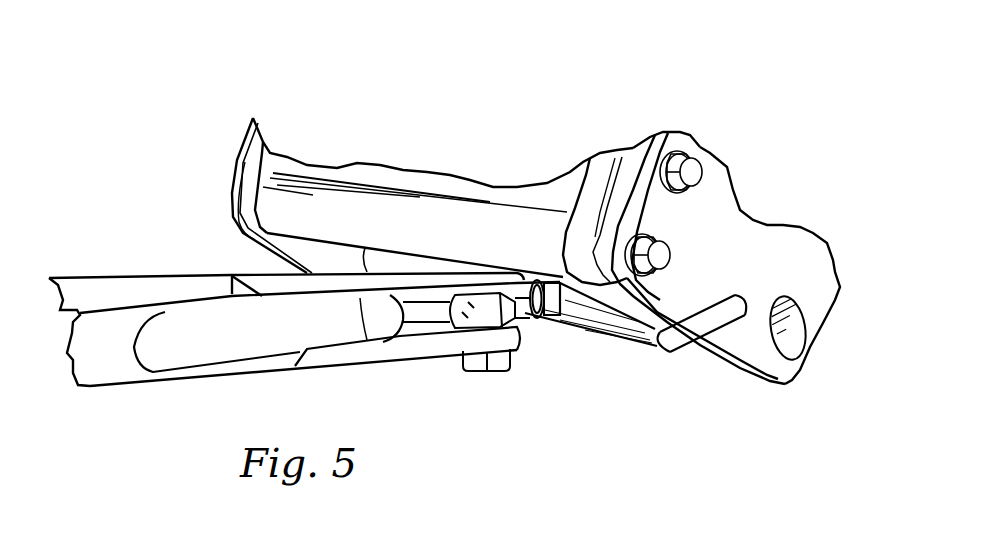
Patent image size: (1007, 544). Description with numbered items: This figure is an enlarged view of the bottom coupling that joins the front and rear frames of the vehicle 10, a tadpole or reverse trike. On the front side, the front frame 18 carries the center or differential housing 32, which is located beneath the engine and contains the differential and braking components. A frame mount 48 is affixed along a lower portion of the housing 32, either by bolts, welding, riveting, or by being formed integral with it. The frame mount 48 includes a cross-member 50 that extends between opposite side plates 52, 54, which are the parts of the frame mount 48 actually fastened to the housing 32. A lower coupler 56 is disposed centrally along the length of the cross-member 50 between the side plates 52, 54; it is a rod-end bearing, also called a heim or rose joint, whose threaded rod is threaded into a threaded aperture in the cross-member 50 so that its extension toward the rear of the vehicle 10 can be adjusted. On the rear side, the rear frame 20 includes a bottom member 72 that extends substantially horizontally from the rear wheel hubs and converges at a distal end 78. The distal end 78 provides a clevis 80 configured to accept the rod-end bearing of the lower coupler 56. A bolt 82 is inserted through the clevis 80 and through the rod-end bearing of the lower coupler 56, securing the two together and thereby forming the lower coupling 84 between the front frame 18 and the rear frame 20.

The vehicle 10 is at (752, 80).
The front frame 18 is at (587, 160).
The rear frame 20 is at (83, 287).
The differential housing 32 is at (653, 131).
The frame mount 48 is at (823, 287).
The cross-member 50 is at (633, 343).
The side plate 52 is at (817, 322).
The side plate 54 is at (267, 255).
The lower coupler 56 is at (450, 325).
The bottom member 72 is at (97, 380).
The distal end 78 is at (462, 401).
The clevis 80 is at (395, 358).
The bolt 82 is at (493, 372).
The lower coupling 84 is at (540, 357).